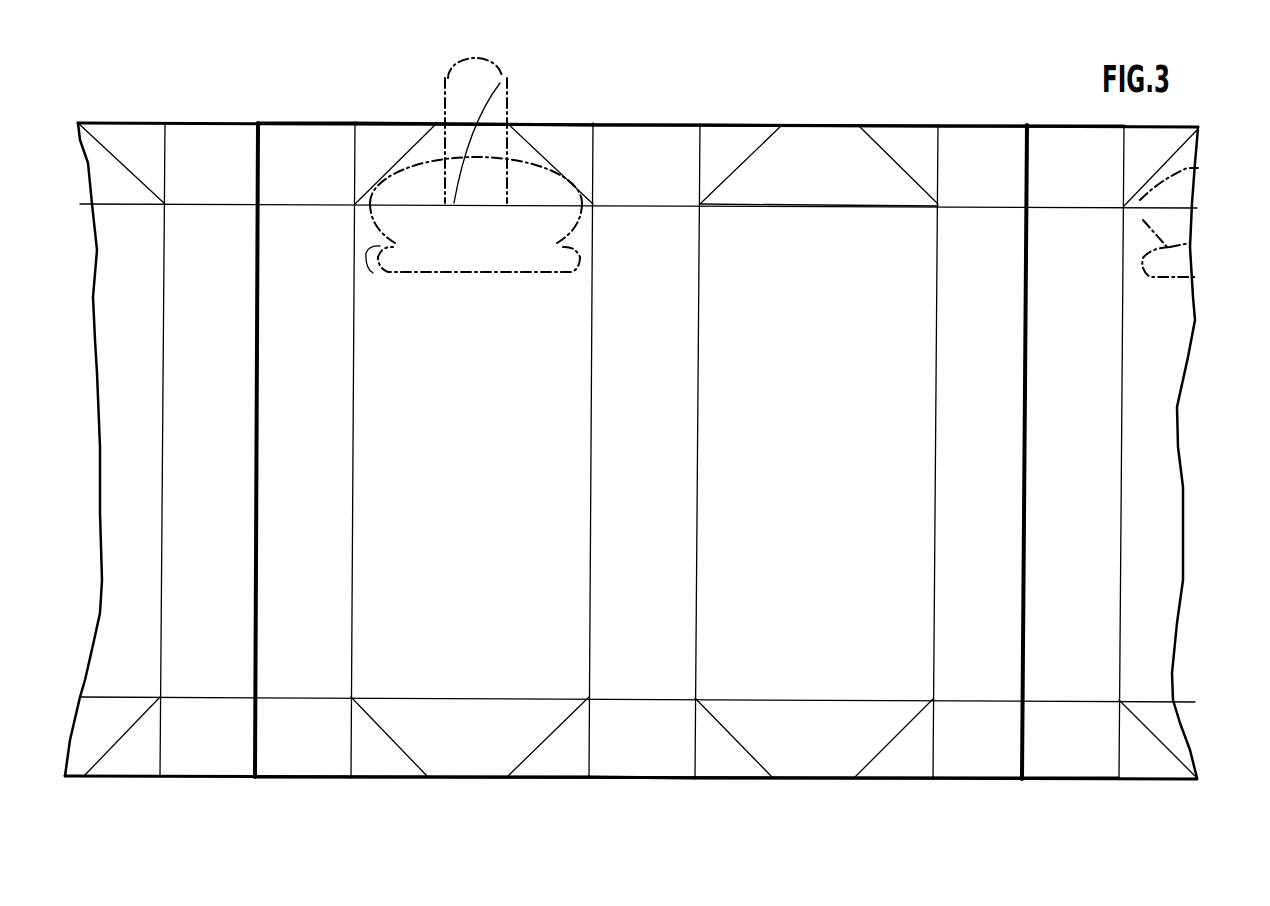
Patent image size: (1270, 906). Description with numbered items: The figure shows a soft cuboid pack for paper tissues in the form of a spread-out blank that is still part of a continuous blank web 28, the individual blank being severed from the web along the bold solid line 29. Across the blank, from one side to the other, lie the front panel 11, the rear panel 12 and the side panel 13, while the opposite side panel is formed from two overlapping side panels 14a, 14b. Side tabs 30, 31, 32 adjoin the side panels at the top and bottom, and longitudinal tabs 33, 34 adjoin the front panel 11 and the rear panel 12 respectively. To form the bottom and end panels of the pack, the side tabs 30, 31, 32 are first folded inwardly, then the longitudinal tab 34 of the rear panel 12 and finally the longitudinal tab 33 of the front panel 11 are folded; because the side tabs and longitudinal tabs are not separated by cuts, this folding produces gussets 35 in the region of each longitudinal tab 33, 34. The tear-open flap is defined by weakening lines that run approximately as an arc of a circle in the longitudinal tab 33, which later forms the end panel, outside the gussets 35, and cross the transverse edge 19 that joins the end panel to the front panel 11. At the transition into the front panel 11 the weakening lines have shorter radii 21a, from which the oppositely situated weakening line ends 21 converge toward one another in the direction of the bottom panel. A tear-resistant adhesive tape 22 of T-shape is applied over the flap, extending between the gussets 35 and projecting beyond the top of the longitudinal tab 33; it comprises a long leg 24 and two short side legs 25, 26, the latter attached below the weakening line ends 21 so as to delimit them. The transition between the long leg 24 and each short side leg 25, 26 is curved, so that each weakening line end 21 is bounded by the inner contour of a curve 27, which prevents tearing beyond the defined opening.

The front panel 11 is at (447, 467).
The rear panel 12 is at (801, 467).
The side panel 13 is at (620, 467).
The side panel 14a is at (995, 467).
The side panel 14b is at (318, 467).
The transverse edge 19 is at (478, 143).
The weakening line ends 21 is at (385, 230).
The shorter radii 21a is at (390, 242).
The adhesive tape 22 is at (467, 83).
The long leg 24 is at (503, 140).
The short side leg 25 is at (703, 145).
The short side leg 26 is at (373, 273).
The curve 27 is at (375, 187).
The continuous blank web 28 is at (1188, 485).
The bold solid line 29 is at (1032, 120).
The side tab 30 is at (553, 258).
The side tab 31 is at (272, 155).
The side tab 32 is at (980, 153).
The longitudinal tab 33 is at (425, 143).
The longitudinal tab 34 is at (823, 153).
The gussets 35 is at (582, 155).